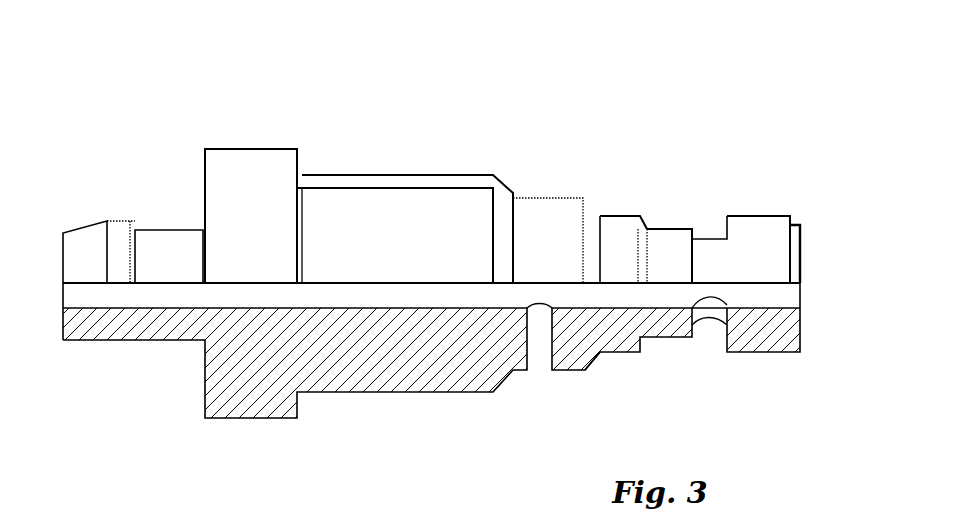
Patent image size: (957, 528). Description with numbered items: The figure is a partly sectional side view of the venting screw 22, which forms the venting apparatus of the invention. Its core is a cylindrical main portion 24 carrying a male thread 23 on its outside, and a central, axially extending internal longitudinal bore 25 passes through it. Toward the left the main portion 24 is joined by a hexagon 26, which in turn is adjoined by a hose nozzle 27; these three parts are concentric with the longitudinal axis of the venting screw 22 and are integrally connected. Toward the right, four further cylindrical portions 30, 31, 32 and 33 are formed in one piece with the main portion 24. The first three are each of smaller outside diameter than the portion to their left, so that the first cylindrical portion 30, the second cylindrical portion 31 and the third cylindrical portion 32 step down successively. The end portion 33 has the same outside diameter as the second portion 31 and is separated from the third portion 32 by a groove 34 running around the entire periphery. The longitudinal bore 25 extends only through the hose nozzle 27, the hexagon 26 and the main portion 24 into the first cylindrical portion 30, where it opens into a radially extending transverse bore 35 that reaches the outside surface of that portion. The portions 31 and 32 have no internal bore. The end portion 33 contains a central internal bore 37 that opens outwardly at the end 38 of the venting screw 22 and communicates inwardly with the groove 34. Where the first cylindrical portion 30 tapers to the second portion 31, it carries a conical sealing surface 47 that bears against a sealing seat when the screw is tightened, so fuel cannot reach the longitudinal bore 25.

The venting screw 22 is at (446, 96).
The male thread 23 is at (403, 180).
The cylindrical main portion 24 is at (350, 217).
The internal longitudinal bore 25 is at (392, 300).
The hexagon 26 is at (247, 180).
The hose nozzle 27 is at (84, 245).
The first cylindrical portion 30 is at (548, 205).
The second cylindrical portion 31 is at (622, 223).
The third cylindrical portion 32 is at (668, 238).
The cylindrical portion forming the right-hand end 33 is at (758, 222).
The groove 34 is at (708, 235).
The transverse bore 35 is at (542, 358).
The central internal bore 37 is at (793, 297).
The end 38 is at (800, 245).
The sealing surface 47 is at (594, 224).